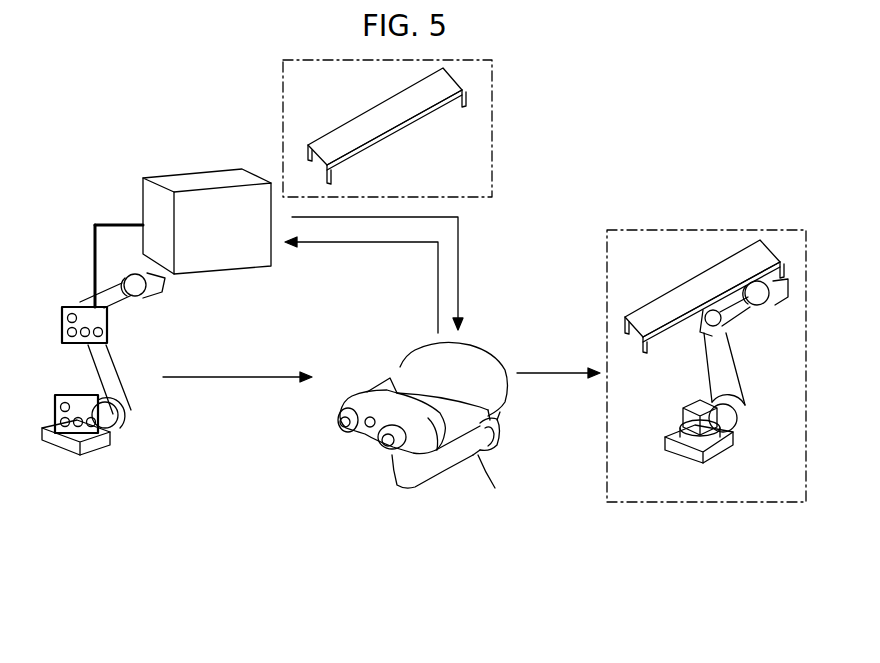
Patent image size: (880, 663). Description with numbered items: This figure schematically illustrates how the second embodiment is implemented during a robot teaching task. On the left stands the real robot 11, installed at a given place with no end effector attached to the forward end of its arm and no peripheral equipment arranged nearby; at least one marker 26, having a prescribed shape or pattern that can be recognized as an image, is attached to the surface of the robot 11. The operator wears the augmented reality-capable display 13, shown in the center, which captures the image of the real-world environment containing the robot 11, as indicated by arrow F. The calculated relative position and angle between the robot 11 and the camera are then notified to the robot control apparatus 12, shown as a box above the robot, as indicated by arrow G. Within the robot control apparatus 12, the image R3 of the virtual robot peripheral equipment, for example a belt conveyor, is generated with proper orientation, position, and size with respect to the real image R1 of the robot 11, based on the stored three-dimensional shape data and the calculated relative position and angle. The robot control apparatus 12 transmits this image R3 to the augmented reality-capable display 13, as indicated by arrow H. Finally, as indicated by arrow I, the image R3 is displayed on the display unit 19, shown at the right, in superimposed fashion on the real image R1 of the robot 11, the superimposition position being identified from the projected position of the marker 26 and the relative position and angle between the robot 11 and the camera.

The robot 11 is at (125, 427).
The robot control apparatus 12 is at (198, 178).
The augmented reality-capable display 13 is at (365, 368).
The display unit 19 is at (660, 503).
The marker 26 is at (62, 322).
The image of the virtual robot peripheral equipment R3 is at (358, 113).
The real image of the robot R1 is at (730, 377).
The arrow F is at (278, 380).
The arrow G is at (413, 243).
The arrow H is at (459, 227).
The arrow I is at (543, 368).